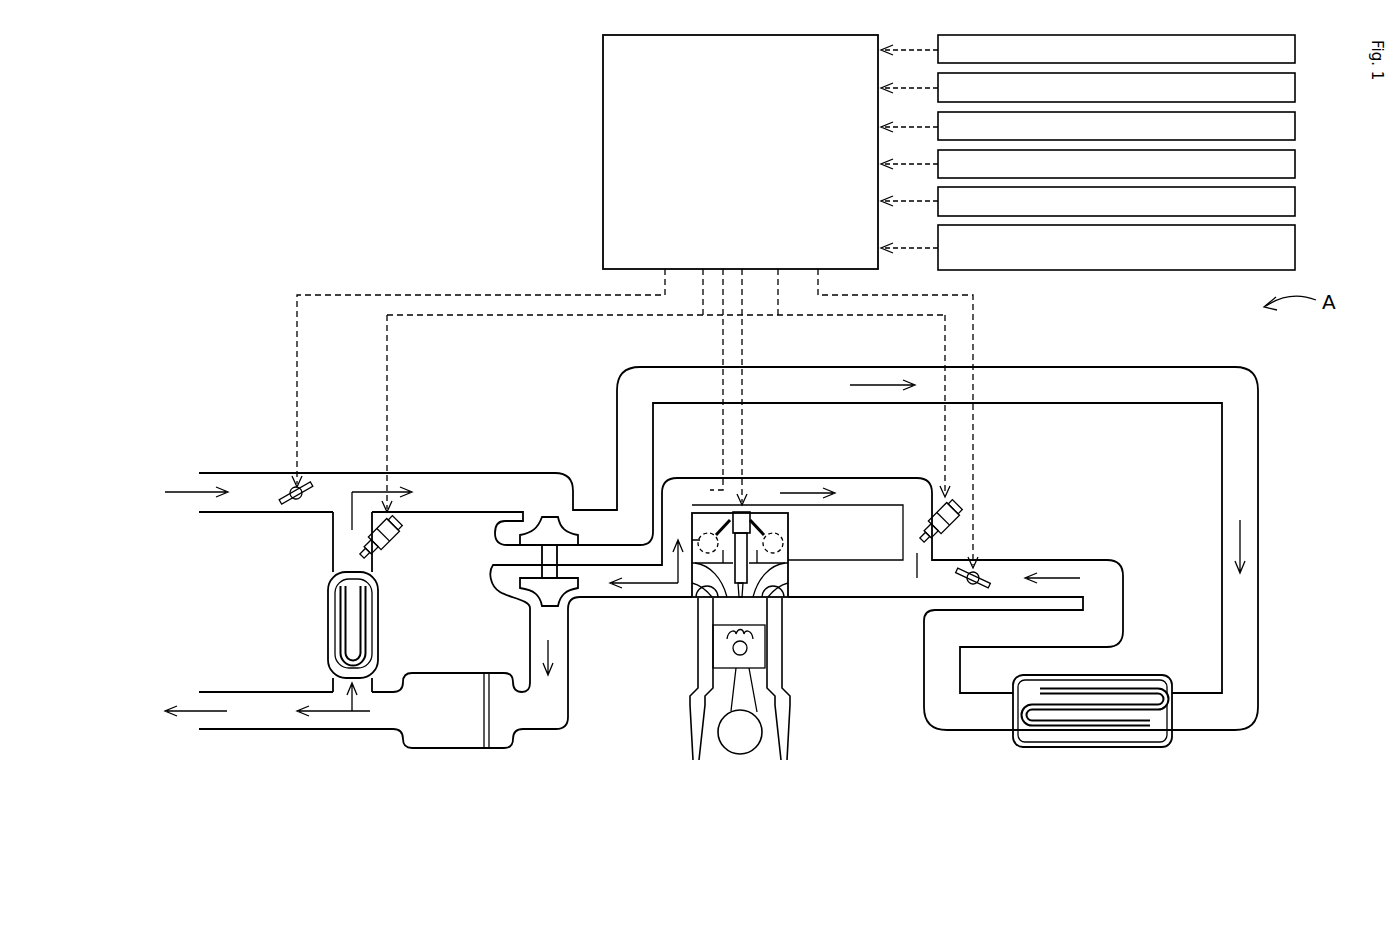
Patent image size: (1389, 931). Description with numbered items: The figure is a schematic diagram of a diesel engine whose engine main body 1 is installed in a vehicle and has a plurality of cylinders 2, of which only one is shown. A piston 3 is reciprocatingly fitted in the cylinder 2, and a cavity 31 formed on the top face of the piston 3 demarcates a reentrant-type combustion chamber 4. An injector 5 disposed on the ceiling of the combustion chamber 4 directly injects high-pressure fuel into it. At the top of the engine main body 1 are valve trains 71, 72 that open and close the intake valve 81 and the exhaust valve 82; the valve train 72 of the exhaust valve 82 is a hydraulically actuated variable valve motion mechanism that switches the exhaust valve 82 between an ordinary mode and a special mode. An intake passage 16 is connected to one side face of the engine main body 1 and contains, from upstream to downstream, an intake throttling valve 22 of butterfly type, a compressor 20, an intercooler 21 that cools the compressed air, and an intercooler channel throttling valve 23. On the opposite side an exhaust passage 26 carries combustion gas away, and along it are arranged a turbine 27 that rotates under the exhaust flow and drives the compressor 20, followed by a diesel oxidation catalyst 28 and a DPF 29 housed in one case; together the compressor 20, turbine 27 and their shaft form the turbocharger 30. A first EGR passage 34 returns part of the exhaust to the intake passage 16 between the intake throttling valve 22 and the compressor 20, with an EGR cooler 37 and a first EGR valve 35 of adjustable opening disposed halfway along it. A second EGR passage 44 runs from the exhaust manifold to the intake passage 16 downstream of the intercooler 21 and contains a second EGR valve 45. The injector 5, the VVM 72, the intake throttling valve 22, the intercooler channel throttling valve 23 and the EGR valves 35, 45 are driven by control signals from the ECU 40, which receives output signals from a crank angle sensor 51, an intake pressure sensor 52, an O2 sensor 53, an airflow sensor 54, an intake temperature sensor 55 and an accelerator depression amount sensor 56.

The engine main body 1 is at (792, 715).
The cylinder 2 is at (766, 612).
The piston 3 is at (722, 645).
The combustion chamber 4 is at (716, 615).
The injector 5 is at (757, 510).
The intake passage 16 is at (887, 600).
The compressor 20 is at (568, 522).
The intercooler 21 is at (1160, 735).
The intake throttling valve 22 is at (292, 488).
The I/C channel throttling valve 23 is at (982, 572).
The exhaust passage 26 is at (570, 700).
The turbine 27 is at (570, 592).
The diesel oxidation catalyst 28 is at (500, 740).
The DPF 29 is at (440, 740).
The turbocharger 30 is at (494, 616).
The cavity 31 is at (750, 637).
The first EGR passage 34 is at (333, 540).
The first EGR valve 35 is at (396, 542).
The EGR cooler 37 is at (370, 622).
The ECU 40 is at (603, 140).
The second EGR passage 44 is at (830, 478).
The second EGR valve 45 is at (962, 515).
The crank angle sensor 51 is at (1297, 48).
The intake pressure sensor 52 is at (1297, 87).
The O2 sensor 53 is at (1297, 125).
The airflow sensor 54 is at (1297, 163).
The intake temperature sensor 55 is at (1297, 200).
The accelerator depression amount sensor 56 is at (1297, 247).
The valve train 71 is at (778, 531).
The VVM 72 is at (710, 524).
The intake valve 81 is at (781, 556).
The exhaust valve 82 is at (690, 540).